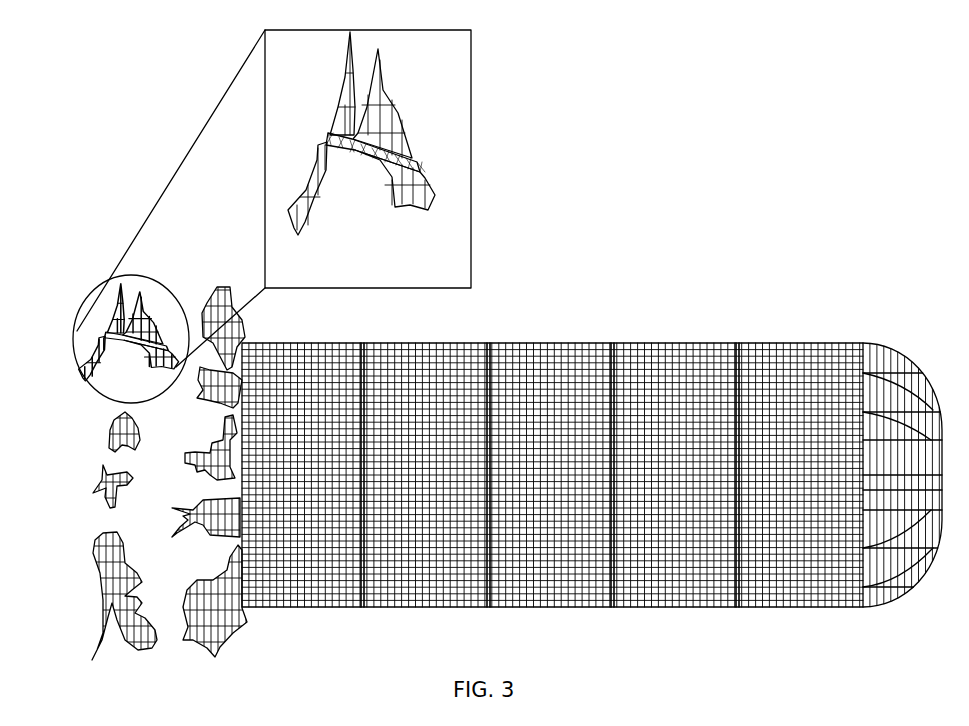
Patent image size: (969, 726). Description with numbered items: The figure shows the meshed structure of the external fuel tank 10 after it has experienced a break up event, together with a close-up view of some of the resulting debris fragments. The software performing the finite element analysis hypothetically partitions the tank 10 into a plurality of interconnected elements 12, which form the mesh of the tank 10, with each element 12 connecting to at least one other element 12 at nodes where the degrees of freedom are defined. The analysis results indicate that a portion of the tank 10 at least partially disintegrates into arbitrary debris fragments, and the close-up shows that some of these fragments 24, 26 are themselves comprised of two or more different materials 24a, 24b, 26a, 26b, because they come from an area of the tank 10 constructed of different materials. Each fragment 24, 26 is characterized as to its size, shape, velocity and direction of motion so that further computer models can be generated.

The tank 10 is at (880, 103).
The interconnected element 12 is at (388, 145).
The debris fragment 24 is at (147, 307).
The material 24a is at (392, 108).
The material 24b is at (398, 153).
The debris fragment 26 is at (120, 323).
The material 26a is at (343, 102).
The material 26b is at (352, 140).